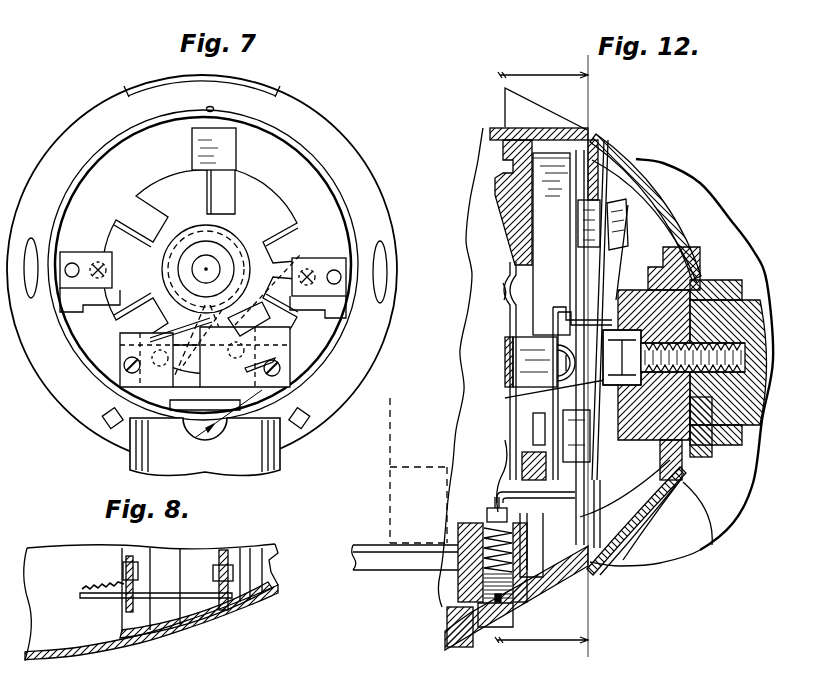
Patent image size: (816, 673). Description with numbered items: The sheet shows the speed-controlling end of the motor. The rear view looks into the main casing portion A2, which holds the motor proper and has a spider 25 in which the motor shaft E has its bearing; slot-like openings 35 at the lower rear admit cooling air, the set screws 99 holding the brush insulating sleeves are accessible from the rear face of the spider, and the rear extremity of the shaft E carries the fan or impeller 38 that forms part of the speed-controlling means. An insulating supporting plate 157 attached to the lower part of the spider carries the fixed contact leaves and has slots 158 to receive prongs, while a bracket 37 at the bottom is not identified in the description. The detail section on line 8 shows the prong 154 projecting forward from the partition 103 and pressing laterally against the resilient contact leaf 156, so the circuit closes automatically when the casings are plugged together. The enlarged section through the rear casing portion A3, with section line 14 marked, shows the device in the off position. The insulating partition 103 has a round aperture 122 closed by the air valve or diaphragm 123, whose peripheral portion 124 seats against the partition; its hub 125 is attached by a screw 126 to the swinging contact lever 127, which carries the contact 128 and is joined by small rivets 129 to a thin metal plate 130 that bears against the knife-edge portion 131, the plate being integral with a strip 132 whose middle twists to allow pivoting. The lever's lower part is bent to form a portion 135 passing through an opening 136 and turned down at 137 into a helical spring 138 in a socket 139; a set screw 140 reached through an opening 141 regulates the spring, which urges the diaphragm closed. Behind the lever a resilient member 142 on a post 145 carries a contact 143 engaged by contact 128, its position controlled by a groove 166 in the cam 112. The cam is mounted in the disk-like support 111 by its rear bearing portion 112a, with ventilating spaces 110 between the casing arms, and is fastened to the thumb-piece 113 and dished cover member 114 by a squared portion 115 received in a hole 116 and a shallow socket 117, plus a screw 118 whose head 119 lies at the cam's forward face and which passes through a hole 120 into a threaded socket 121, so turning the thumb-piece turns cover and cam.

In FIG. 7, the main casing portion A2 is at (333, 127).
In FIG. 8, the main casing portion A2 is at (70, 648).
In FIG. 8, the rear casing portion A3 is at (215, 626).
In FIG. 12, the rear casing portion A3 is at (508, 110).
In FIG. 7, the motor shaft E is at (206, 270).
In FIG. 7, the section line 8— 8 is at (220, 357).
In FIG. 12, the section line 14 is at (541, 358).
In FIG. 7, the spider 25 is at (217, 160).
In FIG. 7, the slot-like openings 35 is at (105, 420).
In FIG. 7, the bracket 37 is at (140, 452).
In FIG. 7, the fan or impeller 38 is at (163, 190).
In FIG. 12, the fan or impeller 38 is at (388, 490).
In FIG. 7, the set screws 99 is at (100, 255).
In FIG. 8, the partition 103 is at (224, 550).
In FIG. 12, the partition 103 is at (500, 190).
In FIG. 12, the ventilating spaces 110 is at (607, 595).
In FIG. 12, the disk-like support 111 is at (702, 549).
In FIG. 12, the cam 112 is at (727, 278).
In FIG. 12, the rear bearing portion 112a is at (720, 236).
In FIG. 12, the thumb-piece 113 is at (730, 233).
In FIG. 12, the cover member 114 is at (620, 163).
In FIG. 12, the squared portion 115 is at (702, 330).
In FIG. 12, the hole in cover piece 116 is at (706, 432).
In FIG. 12, the shallow socket 117 is at (682, 472).
In FIG. 12, the screw 118 is at (632, 440).
In FIG. 12, the screw head 119 is at (530, 394).
In FIG. 12, the hole in cam 120 is at (700, 300).
In FIG. 12, the threaded socket 121 is at (766, 452).
In FIG. 12, the aperture 122 is at (553, 264).
In FIG. 12, the air valve or diaphragm 123 is at (516, 295).
In FIG. 12, the peripheral portion 124 is at (510, 262).
In FIG. 12, the hub 125 is at (520, 350).
In FIG. 12, the screw 126 is at (562, 362).
In FIG. 12, the swinging contact lever 127 is at (555, 318).
In FIG. 12, the electrical contact 128 is at (602, 162).
In FIG. 12, the rivets 129 is at (533, 425).
In FIG. 12, the metal plate 130 is at (522, 458).
In FIG. 12, the knife-edge portion 131 is at (643, 550).
In FIG. 12, the strip 132 is at (620, 560).
In FIG. 12, the bent portion 135 is at (505, 492).
In FIG. 12, the opening 136 is at (535, 560).
In FIG. 12, the downward bend 137 is at (496, 501).
In FIG. 12, the helical spring 138 is at (460, 572).
In FIG. 12, the socket 139 is at (470, 598).
In FIG. 12, the set screw 140 is at (460, 620).
In FIG. 12, the opening 141 is at (505, 607).
In FIG. 12, the cooperating member 142 is at (645, 262).
In FIG. 12, the contact 143 is at (640, 222).
In FIG. 12, the post 145 is at (580, 436).
In FIG. 8, the prong member 154 is at (158, 602).
In FIG. 12, the prong member 154 is at (380, 570).
In FIG. 8, the fixed contact leaf 156 is at (92, 588).
In FIG. 7, the insulating supporting plate 157 is at (290, 383).
In FIG. 7, the slots 158 is at (242, 383).
In FIG. 12, the groove 166 is at (610, 330).